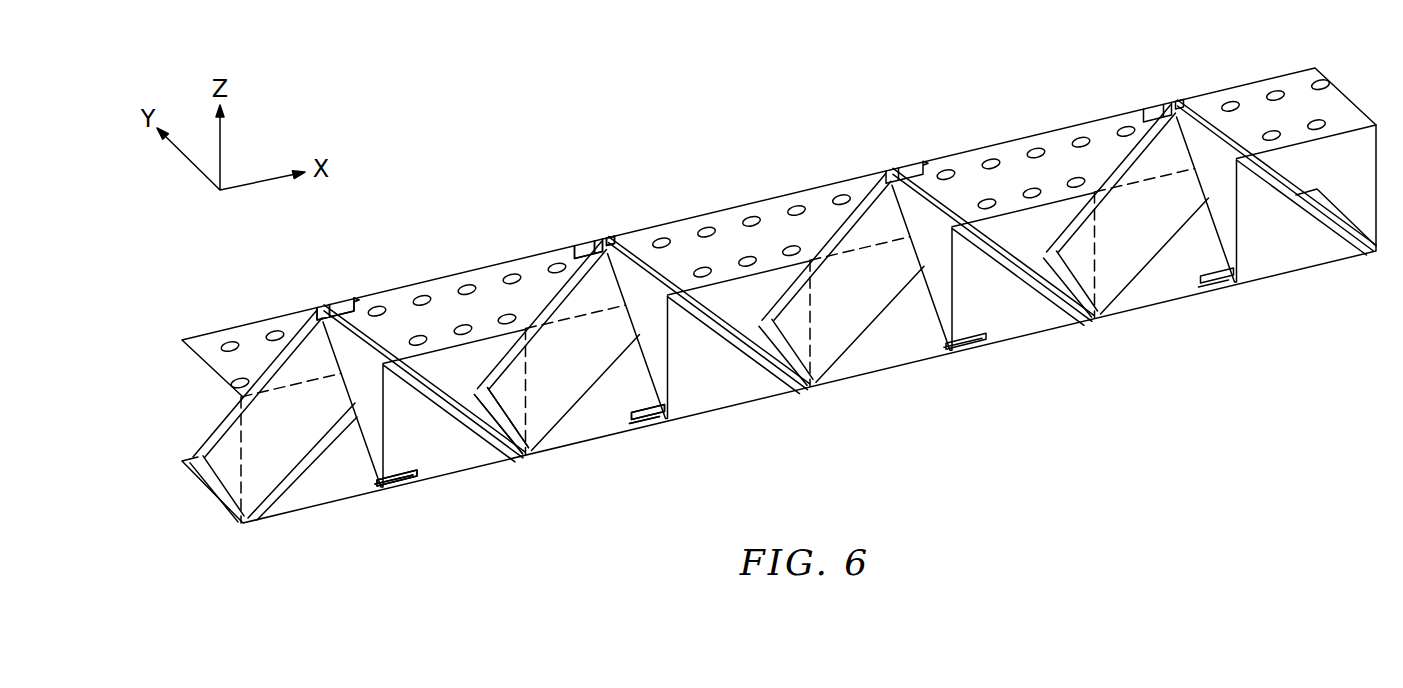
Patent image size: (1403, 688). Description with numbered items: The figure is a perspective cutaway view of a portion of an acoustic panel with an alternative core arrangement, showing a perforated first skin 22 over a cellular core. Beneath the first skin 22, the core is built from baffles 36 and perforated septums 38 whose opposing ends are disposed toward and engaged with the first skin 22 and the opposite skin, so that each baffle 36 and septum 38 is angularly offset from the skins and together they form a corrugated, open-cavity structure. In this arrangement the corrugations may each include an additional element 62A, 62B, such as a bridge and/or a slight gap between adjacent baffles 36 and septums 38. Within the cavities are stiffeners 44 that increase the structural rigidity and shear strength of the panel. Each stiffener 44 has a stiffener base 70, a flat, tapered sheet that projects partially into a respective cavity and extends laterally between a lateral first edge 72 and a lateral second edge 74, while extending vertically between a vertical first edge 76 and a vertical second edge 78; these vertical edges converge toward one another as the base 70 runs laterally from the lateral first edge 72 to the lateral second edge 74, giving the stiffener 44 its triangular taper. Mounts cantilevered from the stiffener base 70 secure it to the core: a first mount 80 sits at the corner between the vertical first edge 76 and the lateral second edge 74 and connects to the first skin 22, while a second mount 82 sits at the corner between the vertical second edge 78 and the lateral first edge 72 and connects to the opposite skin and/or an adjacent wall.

The first skin 22 is at (750, 322).
The baffle 36 is at (398, 330).
The perforated septum 38 is at (217, 427).
The additional element 62A is at (322, 303).
The additional element 62B is at (525, 460).
The first mount 80 is at (350, 300).
The lateral second edge 74 is at (607, 234).
The vertical first edge 76 is at (655, 285).
The vertical second edge 78 is at (640, 342).
The stiffener base 70 is at (606, 380).
The lateral first edge 72 is at (668, 372).
The stiffener 44 is at (366, 457).
The second mount 82 is at (408, 490).